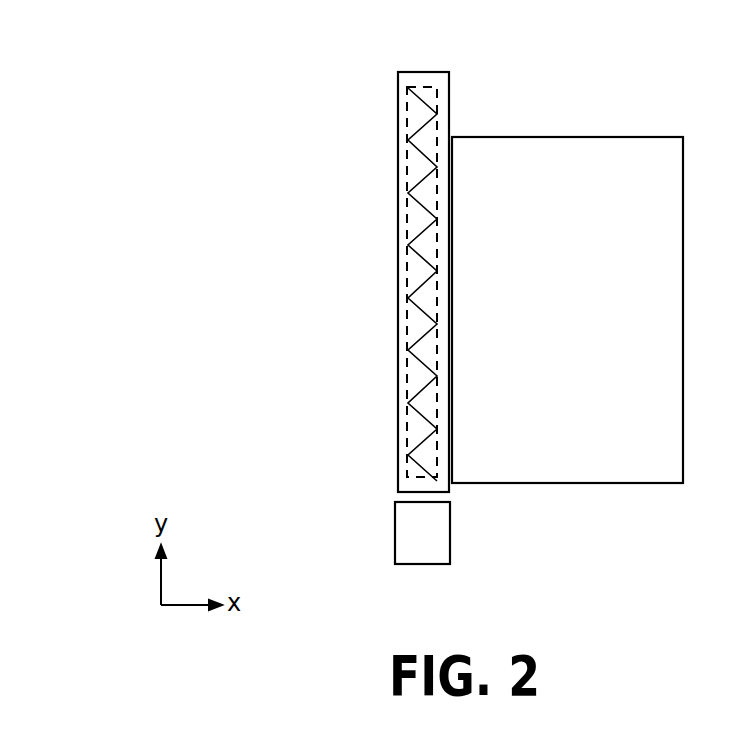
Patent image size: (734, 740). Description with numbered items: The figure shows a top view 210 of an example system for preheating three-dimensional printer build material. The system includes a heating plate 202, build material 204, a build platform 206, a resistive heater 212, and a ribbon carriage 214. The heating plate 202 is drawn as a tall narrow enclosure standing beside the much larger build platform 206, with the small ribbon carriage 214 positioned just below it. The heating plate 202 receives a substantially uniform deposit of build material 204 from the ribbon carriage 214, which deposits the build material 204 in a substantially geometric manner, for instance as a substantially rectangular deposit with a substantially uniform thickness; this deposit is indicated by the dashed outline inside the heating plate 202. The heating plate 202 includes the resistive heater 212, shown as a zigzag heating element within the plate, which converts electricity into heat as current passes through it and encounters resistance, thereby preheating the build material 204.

The top view 210 is at (188, 85).
The heating plate 202 is at (398, 118).
The build material 204 is at (407, 165).
The resistive heater 212 is at (415, 229).
The build platform 206 is at (548, 137).
The ribbon carriage 214 is at (395, 522).